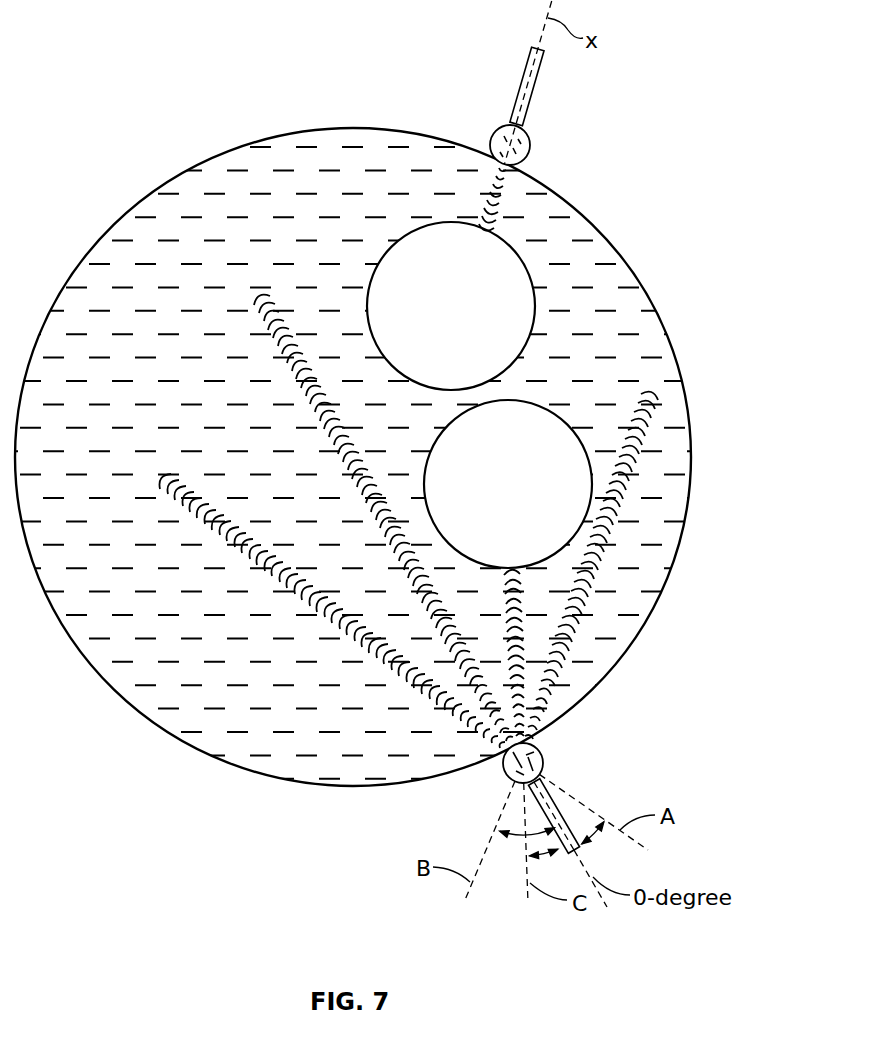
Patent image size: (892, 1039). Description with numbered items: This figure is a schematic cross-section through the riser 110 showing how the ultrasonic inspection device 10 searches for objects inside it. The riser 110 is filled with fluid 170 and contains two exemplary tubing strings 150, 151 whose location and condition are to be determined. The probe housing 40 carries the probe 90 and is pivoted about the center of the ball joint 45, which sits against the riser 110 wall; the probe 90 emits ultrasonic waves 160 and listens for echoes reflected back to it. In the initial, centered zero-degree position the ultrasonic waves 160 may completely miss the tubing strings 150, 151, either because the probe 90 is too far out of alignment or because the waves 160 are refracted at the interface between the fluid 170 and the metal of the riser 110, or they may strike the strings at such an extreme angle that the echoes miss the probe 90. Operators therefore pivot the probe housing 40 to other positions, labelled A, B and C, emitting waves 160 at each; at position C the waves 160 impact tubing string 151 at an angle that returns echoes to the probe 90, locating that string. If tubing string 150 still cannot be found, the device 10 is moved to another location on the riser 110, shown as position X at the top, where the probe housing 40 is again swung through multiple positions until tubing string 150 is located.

The ultrasonic inspection device 10 is at (584, 427).
The probe housing 40 is at (541, 73).
The ball joint 45 is at (531, 148).
The probe 90 is at (507, 127).
The riser 110 is at (637, 278).
The tubing string 150 is at (510, 243).
The tubing string 151 is at (582, 438).
The ultrasonic waves 160 is at (382, 540).
The fluid 170 is at (112, 253).